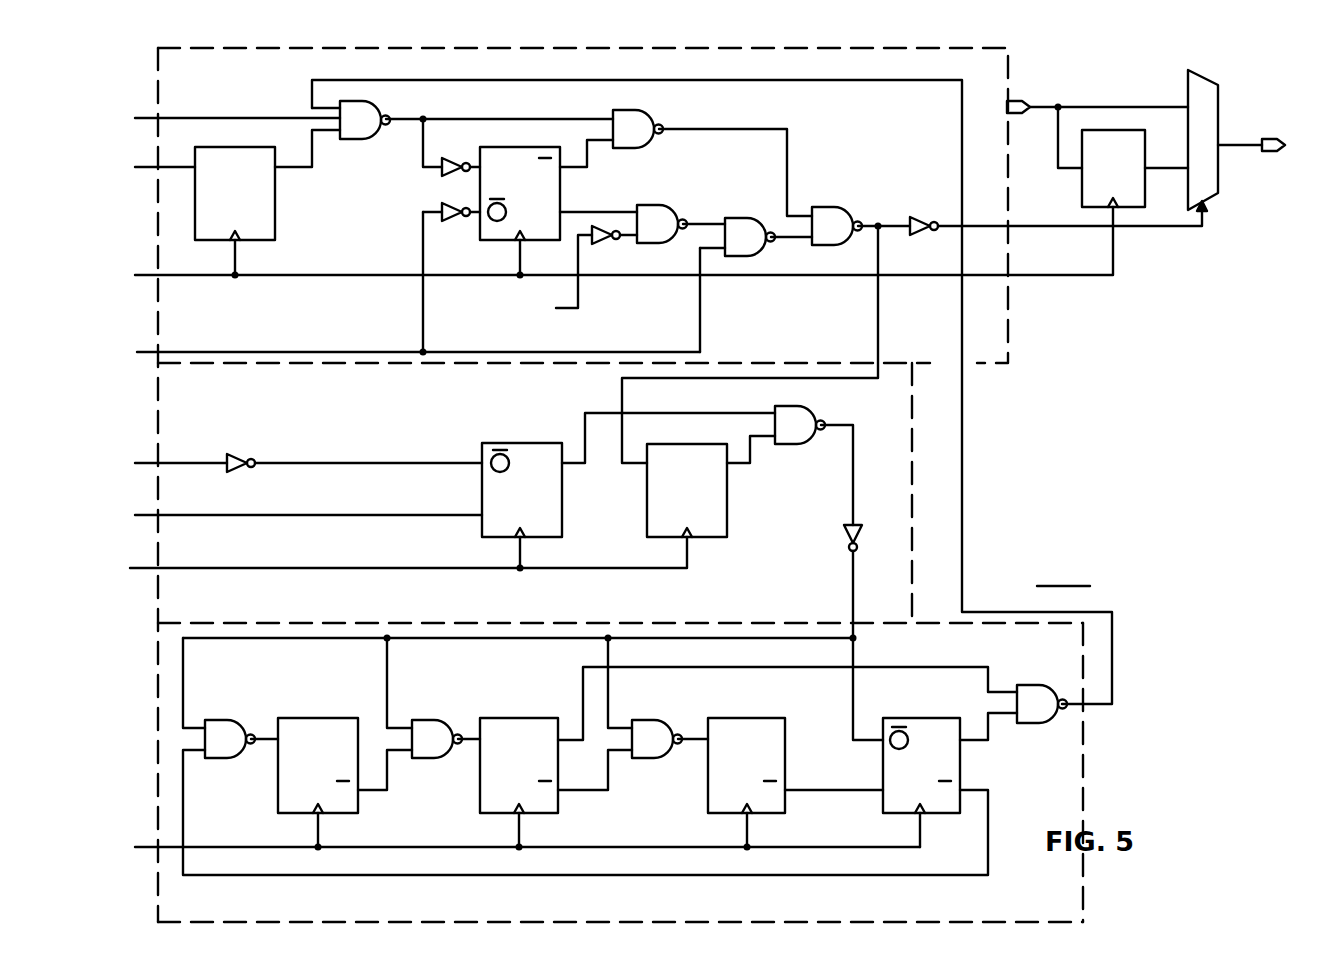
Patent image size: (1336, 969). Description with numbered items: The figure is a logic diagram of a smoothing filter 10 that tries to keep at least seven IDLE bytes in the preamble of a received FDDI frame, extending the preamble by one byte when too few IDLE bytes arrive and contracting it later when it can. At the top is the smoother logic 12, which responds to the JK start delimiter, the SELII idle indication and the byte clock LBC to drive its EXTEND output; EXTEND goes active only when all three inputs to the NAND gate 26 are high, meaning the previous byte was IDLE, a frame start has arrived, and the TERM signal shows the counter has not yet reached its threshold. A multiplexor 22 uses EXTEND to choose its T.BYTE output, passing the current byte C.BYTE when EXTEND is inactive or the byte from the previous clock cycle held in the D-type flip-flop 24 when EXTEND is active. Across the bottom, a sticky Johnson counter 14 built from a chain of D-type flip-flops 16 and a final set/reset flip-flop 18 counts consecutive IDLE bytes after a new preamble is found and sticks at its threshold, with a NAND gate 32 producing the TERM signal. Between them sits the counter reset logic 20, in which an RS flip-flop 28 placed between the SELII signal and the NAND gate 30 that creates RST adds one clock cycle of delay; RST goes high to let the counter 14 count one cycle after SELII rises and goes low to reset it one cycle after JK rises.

The smoothing filter 10 is at (1087, 405).
The smoother logic section 12 is at (391, 73).
The sticky Johnson counter 14 is at (995, 917).
The D-type flip-flops 16 is at (325, 718).
The set/reset flip-flop 18 is at (920, 718).
The counter reset logic 20 is at (455, 615).
The multiplexor 22 is at (1188, 92).
The D-type flip-flop 24 is at (1113, 130).
The NAND gate 26 is at (352, 131).
The RS flip-flop 28 is at (525, 443).
The NAND gate 30 is at (790, 444).
The NAND gate 32 is at (1035, 723).